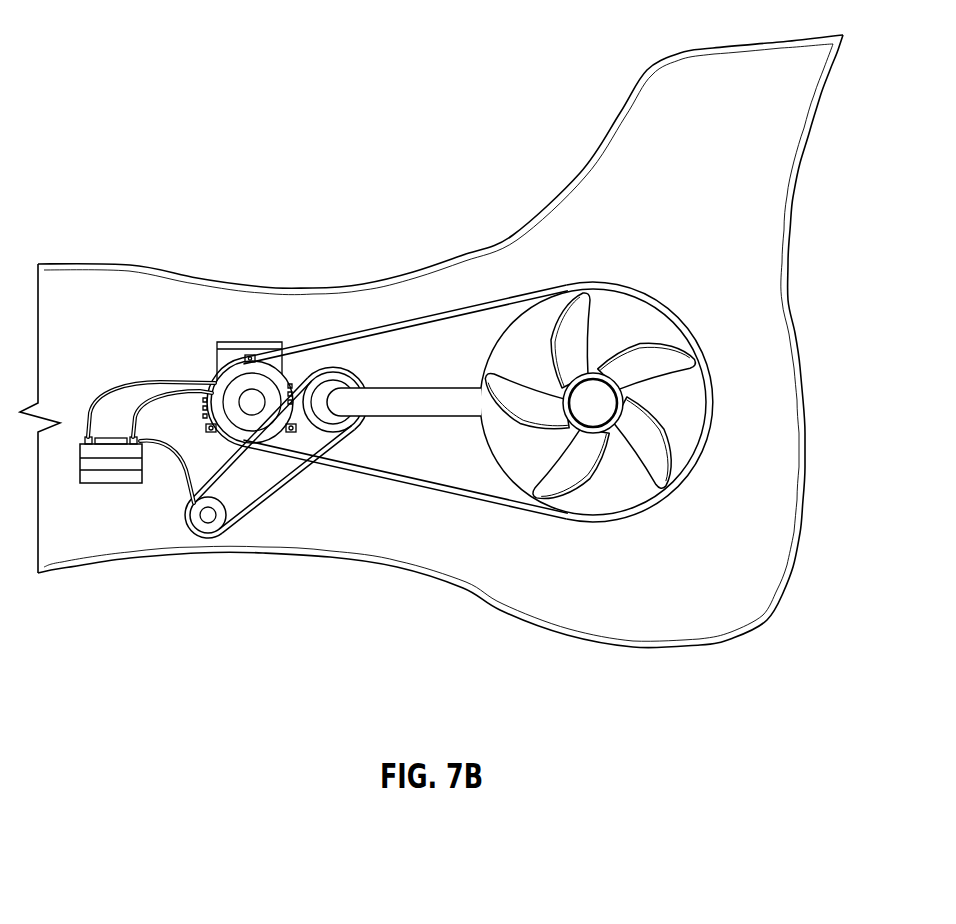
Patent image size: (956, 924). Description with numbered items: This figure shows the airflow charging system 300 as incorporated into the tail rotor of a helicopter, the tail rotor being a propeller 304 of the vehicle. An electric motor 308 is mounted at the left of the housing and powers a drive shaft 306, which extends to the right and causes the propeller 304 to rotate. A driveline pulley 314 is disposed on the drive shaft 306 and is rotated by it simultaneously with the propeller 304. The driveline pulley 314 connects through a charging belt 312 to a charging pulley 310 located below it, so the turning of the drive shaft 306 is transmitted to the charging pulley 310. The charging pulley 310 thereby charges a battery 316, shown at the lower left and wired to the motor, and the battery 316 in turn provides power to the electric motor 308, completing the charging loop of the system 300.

The system 300 is at (124, 116).
The propeller 304 is at (682, 417).
The drive shaft 306 is at (426, 406).
The electric motor 308 is at (217, 368).
The charging pulley 310 is at (205, 533).
The charging belt 312 is at (283, 487).
The driveline pulley 314 is at (333, 388).
The battery 316 is at (102, 481).